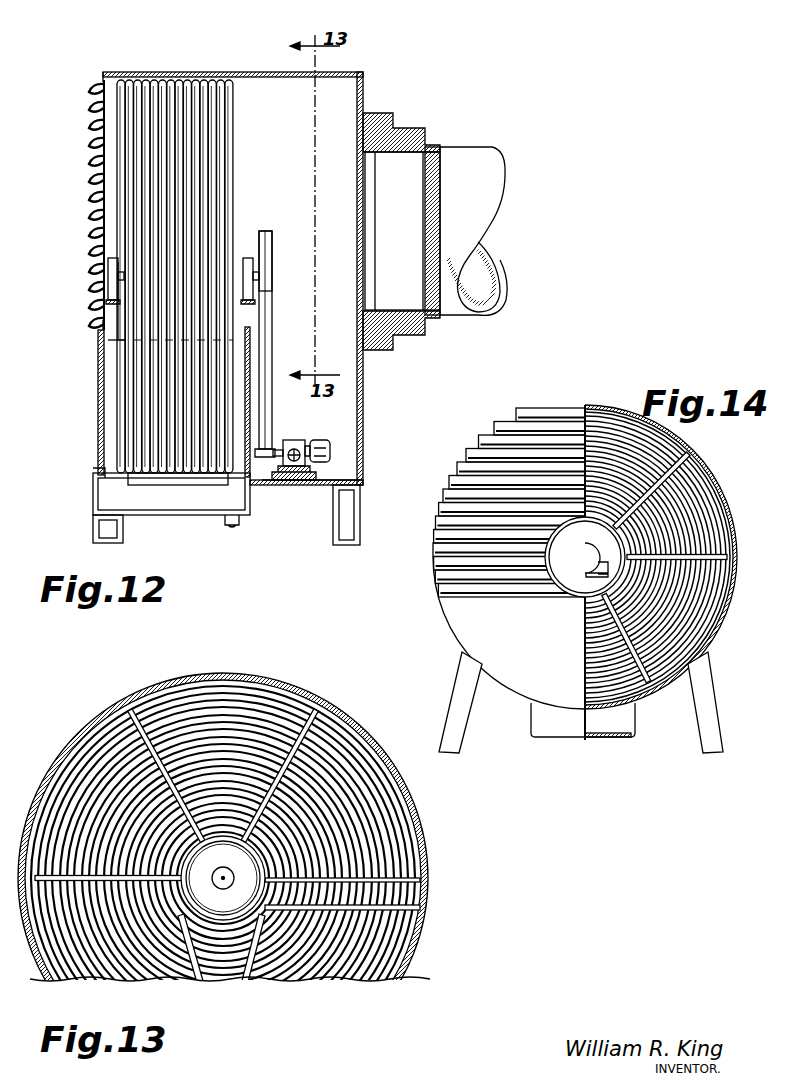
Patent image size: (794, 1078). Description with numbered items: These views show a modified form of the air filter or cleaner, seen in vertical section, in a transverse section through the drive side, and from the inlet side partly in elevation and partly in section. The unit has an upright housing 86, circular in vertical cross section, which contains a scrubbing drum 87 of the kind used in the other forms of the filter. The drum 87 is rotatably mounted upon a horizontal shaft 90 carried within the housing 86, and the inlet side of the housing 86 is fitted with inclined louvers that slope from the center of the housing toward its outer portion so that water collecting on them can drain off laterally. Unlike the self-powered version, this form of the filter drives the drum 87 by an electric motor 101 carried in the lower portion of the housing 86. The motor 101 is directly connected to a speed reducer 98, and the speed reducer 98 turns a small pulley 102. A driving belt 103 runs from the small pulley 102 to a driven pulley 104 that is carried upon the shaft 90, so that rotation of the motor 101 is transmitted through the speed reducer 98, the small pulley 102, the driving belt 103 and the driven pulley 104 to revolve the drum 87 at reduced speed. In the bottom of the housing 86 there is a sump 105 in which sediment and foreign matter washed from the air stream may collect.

In FIG. 12, the housing 86 is at (101, 345).
In FIG. 13, the housing 86 is at (340, 703).
In FIG. 14, the housing 86 is at (722, 628).
In FIG. 12, the scrubbing drum 87 is at (200, 123).
In FIG. 13, the scrubbing drum 87 is at (350, 800).
In FIG. 14, the scrubbing drum 87 is at (708, 506).
In FIG. 12, the horizontal shaft 90 is at (243, 273).
In FIG. 12, the speed reducer 98 is at (290, 484).
In FIG. 12, the electric motor 101 is at (330, 441).
In FIG. 12, the small pulley 102 is at (285, 445).
In FIG. 12, the driving belt 103 is at (273, 360).
In FIG. 13, the driving belt 103 is at (270, 956).
In FIG. 12, the driven pulley 104 is at (273, 262).
In FIG. 13, the driven pulley 104 is at (266, 862).
In FIG. 12, the sump 105 is at (203, 502).
In FIG. 14, the sump 105 is at (608, 722).